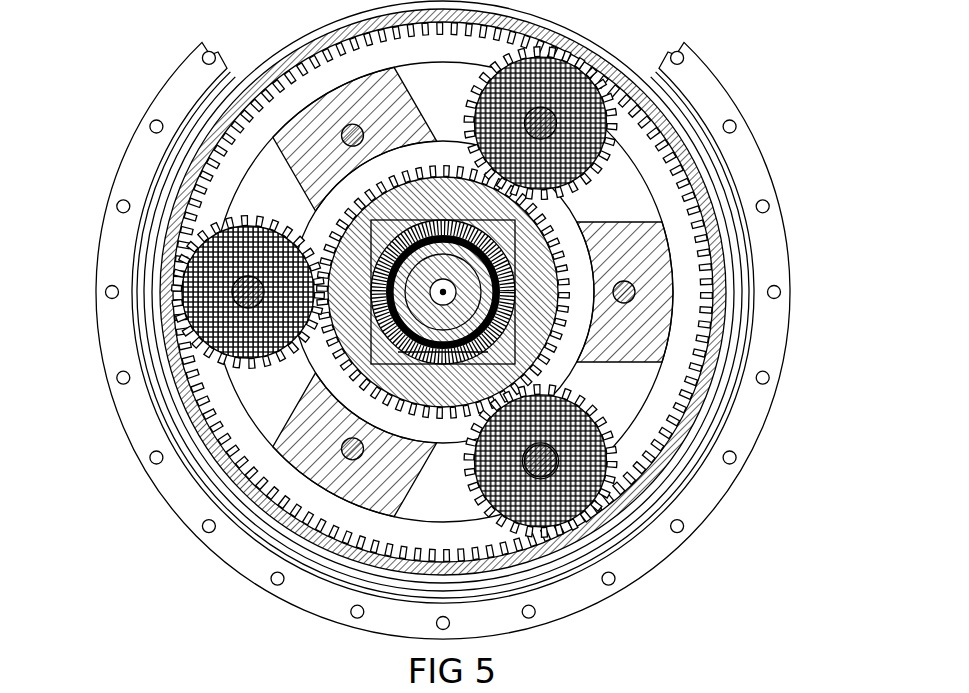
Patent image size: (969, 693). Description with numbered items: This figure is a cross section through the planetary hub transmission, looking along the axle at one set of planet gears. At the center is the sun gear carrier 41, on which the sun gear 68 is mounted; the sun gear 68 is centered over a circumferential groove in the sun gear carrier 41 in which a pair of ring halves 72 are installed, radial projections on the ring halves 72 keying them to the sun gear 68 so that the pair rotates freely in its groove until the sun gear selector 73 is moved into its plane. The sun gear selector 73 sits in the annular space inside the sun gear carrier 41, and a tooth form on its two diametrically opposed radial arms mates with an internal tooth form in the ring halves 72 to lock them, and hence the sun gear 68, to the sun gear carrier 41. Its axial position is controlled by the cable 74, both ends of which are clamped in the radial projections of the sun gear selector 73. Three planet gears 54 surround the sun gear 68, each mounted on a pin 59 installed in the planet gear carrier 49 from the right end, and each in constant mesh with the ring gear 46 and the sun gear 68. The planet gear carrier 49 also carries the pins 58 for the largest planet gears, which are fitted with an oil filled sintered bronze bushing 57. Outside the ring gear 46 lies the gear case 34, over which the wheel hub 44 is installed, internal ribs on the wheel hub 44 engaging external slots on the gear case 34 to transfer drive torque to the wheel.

The gear case 34 is at (727, 265).
The sun gear carrier 41 is at (546, 349).
The wheel hub 44 is at (730, 293).
The ring gear 46 is at (582, 38).
The planet gear carrier 49 is at (397, 78).
The planet gears 54 is at (257, 372).
The oil filled sintered bronze bushing 57 is at (551, 470).
The pin 58 is at (628, 300).
The pin 59 is at (240, 295).
The sun gear 68 is at (413, 411).
The ring halves 72 is at (502, 270).
The sun gear selector 73 is at (347, 223).
The cable 74 is at (442, 345).